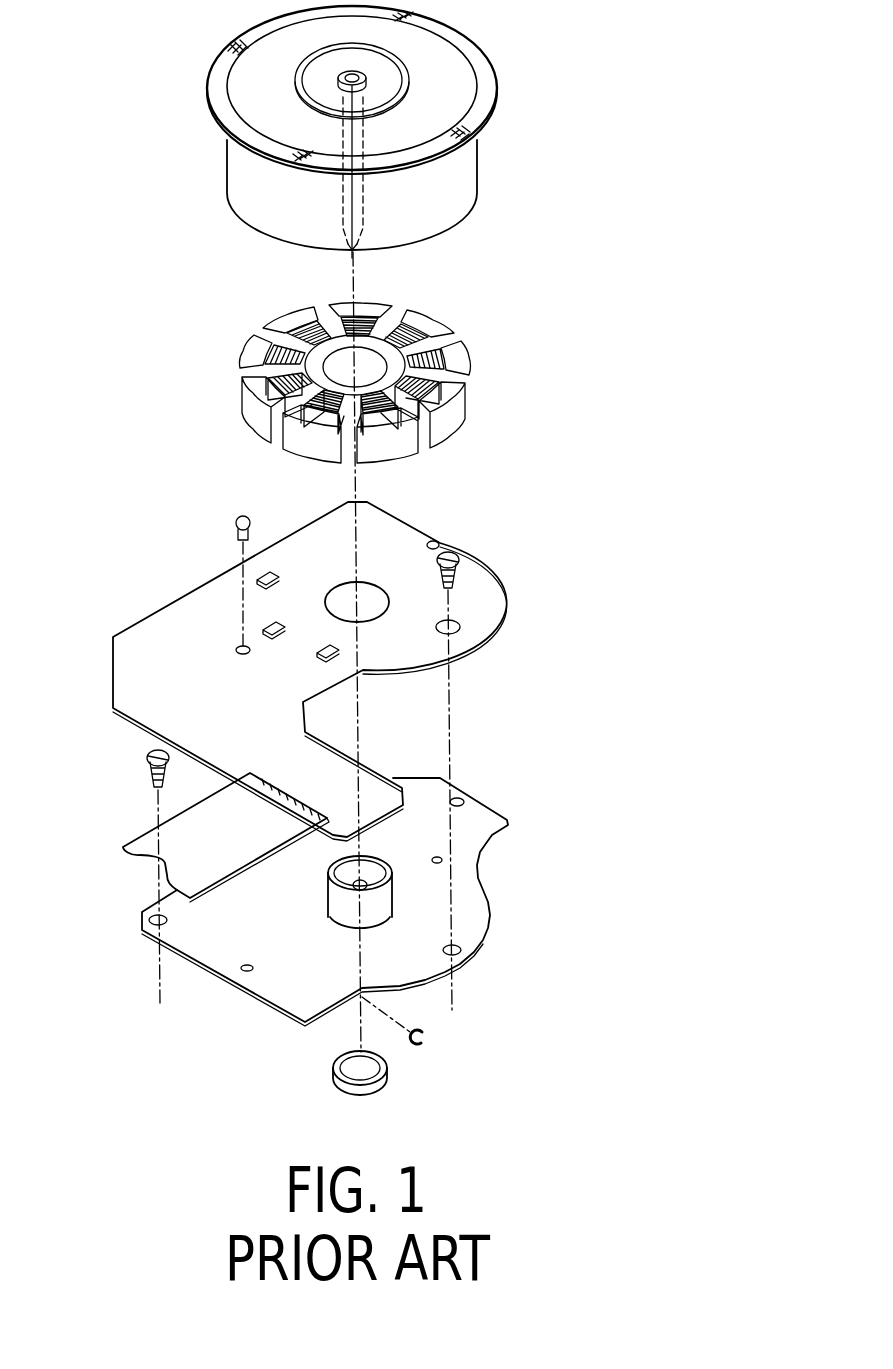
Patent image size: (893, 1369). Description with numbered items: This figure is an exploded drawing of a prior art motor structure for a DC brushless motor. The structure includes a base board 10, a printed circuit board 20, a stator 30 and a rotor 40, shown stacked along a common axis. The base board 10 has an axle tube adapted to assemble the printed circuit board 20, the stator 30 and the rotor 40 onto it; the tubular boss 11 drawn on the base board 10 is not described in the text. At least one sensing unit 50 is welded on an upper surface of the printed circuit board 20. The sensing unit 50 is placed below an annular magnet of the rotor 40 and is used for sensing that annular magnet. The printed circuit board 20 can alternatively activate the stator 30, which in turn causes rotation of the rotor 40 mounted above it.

The base board 10 is at (483, 813).
The bearing boss 11 is at (372, 903).
The printed circuit board 20 is at (400, 537).
The stator 30 is at (430, 323).
The rotor 40 is at (470, 170).
The sensing unit 50 is at (258, 575).